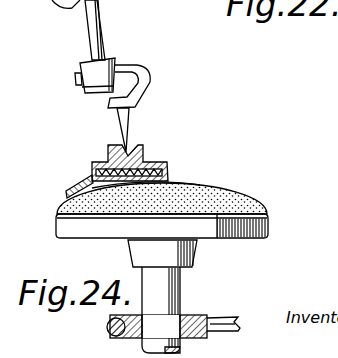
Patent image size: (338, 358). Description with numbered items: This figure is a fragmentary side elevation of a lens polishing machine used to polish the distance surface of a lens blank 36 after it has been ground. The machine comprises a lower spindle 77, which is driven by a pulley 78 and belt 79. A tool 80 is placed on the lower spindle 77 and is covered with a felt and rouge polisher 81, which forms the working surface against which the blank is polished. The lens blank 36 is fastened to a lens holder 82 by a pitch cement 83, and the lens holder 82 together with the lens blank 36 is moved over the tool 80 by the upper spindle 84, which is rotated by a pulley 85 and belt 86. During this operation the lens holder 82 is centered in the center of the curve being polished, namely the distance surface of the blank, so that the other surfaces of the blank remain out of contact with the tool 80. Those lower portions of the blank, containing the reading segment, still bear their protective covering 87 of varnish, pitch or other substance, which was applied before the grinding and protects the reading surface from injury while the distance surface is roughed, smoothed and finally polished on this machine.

The lens blank 36 is at (168, 178).
The lower spindle 77 is at (182, 283).
The pulley 78 is at (197, 313).
The belt 79 is at (227, 319).
The tool 80 is at (268, 225).
The felt and rouge polisher 81 is at (243, 195).
The lens holder 82 is at (147, 149).
The pitch cement 83 is at (96, 180).
The upper spindle 84 is at (104, 52).
The pulley 85 is at (66, 10).
The belt 86 is at (123, 30).
The covering 87 is at (66, 194).